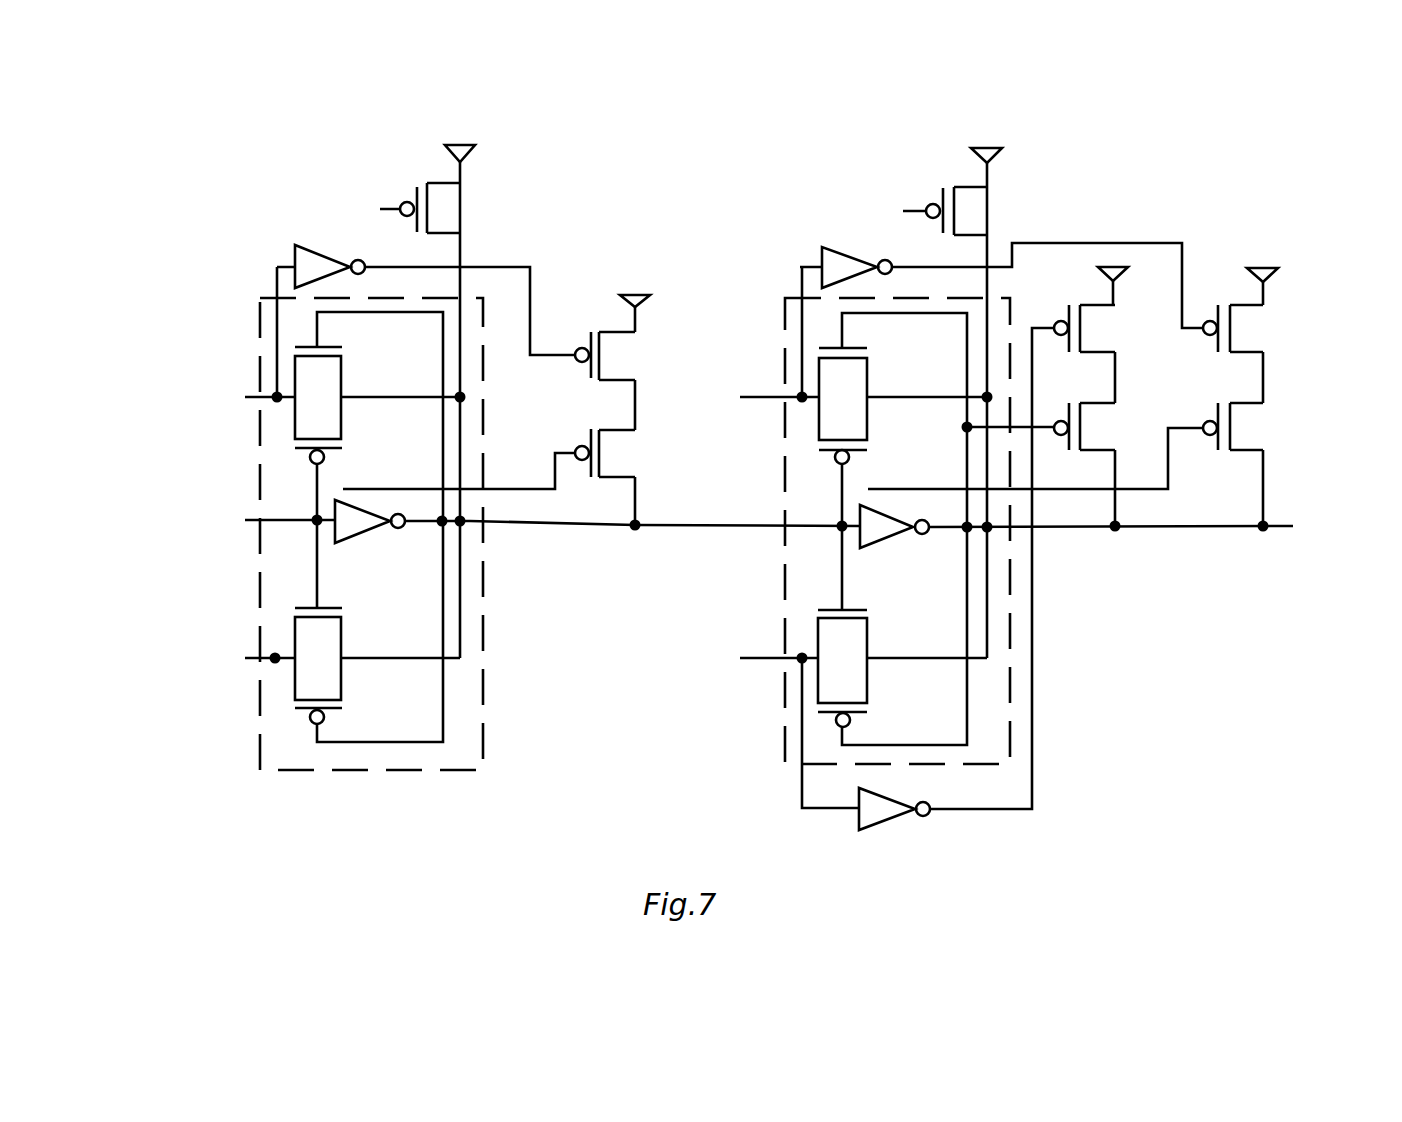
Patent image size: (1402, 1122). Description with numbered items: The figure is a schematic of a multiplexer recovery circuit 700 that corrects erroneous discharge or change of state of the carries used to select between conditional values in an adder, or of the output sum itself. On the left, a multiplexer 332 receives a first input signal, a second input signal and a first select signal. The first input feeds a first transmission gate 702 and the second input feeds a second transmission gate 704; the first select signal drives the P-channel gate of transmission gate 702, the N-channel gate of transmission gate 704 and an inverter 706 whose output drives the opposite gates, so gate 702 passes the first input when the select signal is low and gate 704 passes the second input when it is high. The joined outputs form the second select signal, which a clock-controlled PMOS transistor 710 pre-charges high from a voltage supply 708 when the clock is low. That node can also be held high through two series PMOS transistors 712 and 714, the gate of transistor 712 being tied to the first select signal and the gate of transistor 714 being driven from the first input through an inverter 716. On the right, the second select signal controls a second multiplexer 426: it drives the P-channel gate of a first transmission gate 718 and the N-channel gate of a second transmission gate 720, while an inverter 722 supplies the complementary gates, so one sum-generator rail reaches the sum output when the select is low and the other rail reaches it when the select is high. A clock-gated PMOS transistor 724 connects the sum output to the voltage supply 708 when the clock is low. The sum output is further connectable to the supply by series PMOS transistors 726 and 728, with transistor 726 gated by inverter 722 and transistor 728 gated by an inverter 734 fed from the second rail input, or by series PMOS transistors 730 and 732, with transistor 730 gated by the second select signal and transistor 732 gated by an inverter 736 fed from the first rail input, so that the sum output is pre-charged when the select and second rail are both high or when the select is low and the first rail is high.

The multiplexer recovery circuit 700 is at (1150, 158).
The multiplexer 332 is at (258, 572).
The second multiplexer 426 is at (783, 568).
The first transmission gate 702 is at (343, 365).
The second transmission gate 704 is at (343, 630).
The inverter 706 is at (350, 538).
The voltage supply 708 is at (473, 150).
The PMOS transistor 710 is at (435, 185).
The PMOS transistor 712 is at (617, 473).
The PMOS transistor 714 is at (617, 377).
The inverter 716 is at (313, 246).
The first transmission gate 718 is at (869, 366).
The second transmission gate 720 is at (869, 631).
The inverter 722 is at (874, 541).
The PMOS transistor 724 is at (968, 186).
The first PMOS transistor 726 is at (1095, 447).
The second PMOS transistor 728 is at (1095, 350).
The third PMOS transistor 730 is at (1245, 448).
The fourth PMOS transistor 732 is at (1245, 350).
The inverter 734 is at (884, 828).
The inverter 736 is at (841, 247).